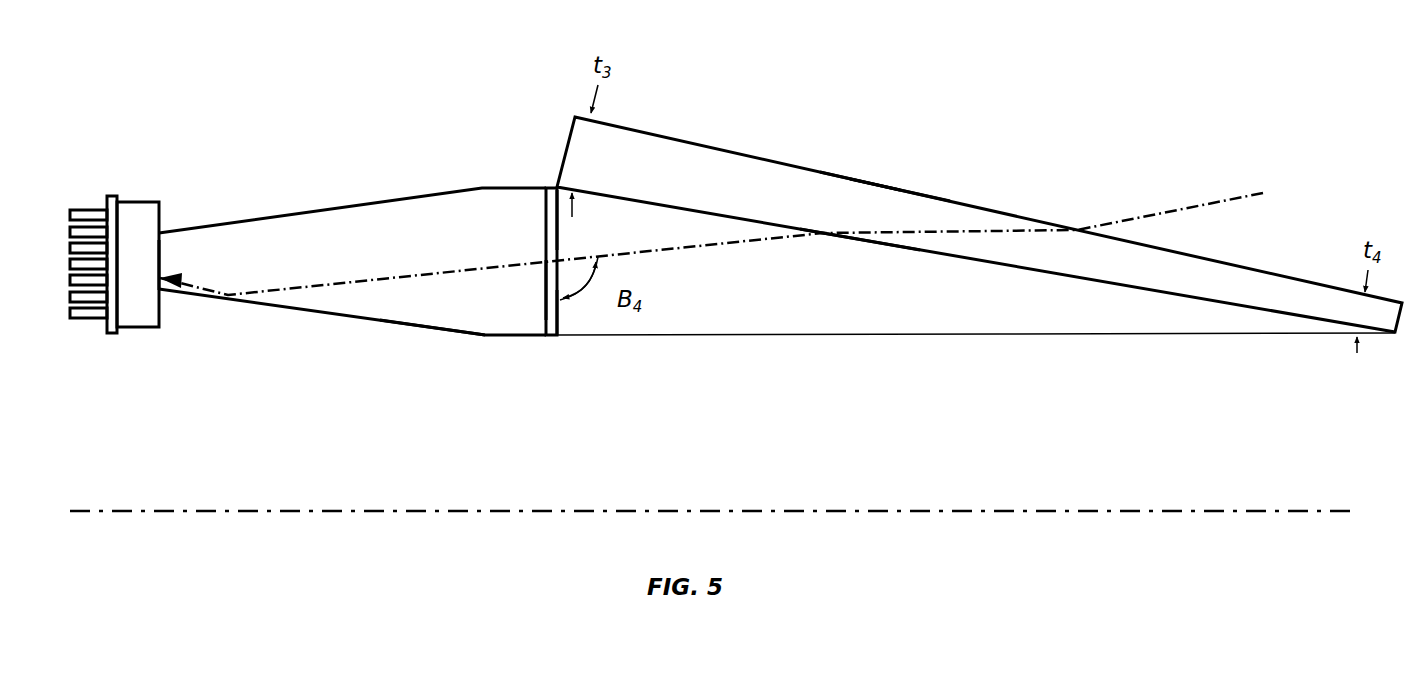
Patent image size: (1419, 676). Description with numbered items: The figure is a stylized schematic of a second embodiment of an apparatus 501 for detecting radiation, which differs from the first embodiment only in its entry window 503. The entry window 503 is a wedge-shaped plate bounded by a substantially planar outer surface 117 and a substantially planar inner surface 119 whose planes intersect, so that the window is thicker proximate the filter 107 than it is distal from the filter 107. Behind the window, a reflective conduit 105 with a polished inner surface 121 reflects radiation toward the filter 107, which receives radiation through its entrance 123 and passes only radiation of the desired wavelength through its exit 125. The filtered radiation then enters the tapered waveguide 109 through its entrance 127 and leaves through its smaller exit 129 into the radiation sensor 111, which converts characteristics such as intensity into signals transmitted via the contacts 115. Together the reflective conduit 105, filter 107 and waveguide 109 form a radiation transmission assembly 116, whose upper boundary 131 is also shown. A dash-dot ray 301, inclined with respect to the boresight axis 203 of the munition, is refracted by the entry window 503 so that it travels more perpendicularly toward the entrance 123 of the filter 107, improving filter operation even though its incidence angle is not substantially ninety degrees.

The reflective conduit 105 is at (1105, 336).
The filter 107 is at (541, 246).
The waveguide 109 is at (372, 300).
The radiation sensor 111 is at (133, 315).
The contacts 115 is at (80, 313).
The radiation transmission assembly 116 is at (433, 334).
The outer surface 117 is at (697, 143).
The inner surface 119 is at (860, 240).
The inner surface of reflective conduit 121 is at (745, 335).
The entrance of filter 123 is at (558, 223).
The exit of filter 125 is at (546, 302).
The entrance of waveguide 127 is at (560, 315).
The exit of waveguide 129 is at (157, 258).
The upper beam edge 131 is at (348, 202).
The boresight axis 203 is at (458, 511).
The ray 301 is at (1170, 210).
The apparatus for detecting radiation 501 is at (865, 125).
The entry window 503 is at (893, 180).